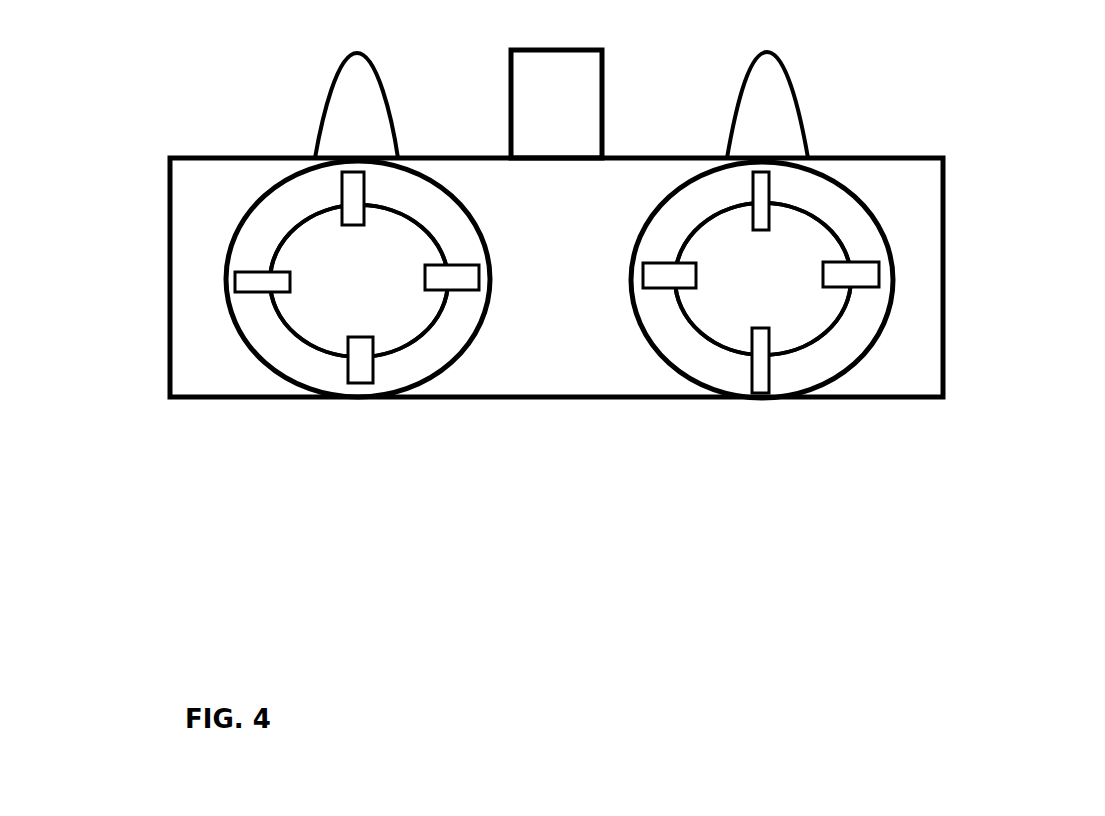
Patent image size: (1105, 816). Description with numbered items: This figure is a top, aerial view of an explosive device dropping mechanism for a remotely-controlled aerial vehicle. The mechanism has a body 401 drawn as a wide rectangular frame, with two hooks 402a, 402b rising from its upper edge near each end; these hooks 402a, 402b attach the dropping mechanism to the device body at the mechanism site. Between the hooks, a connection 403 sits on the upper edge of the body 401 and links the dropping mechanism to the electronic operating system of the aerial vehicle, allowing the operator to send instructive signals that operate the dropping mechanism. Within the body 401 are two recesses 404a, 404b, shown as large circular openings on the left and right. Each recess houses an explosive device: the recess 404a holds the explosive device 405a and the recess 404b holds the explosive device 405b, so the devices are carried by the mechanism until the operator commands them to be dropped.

The housing body 401 is at (557, 357).
The hook 402a is at (782, 120).
The hook 402b is at (358, 108).
The connection 403 is at (575, 107).
The recess 404a is at (417, 357).
The recess 404b is at (737, 366).
The explosive device 405a is at (805, 322).
The explosive device 405b is at (325, 322).